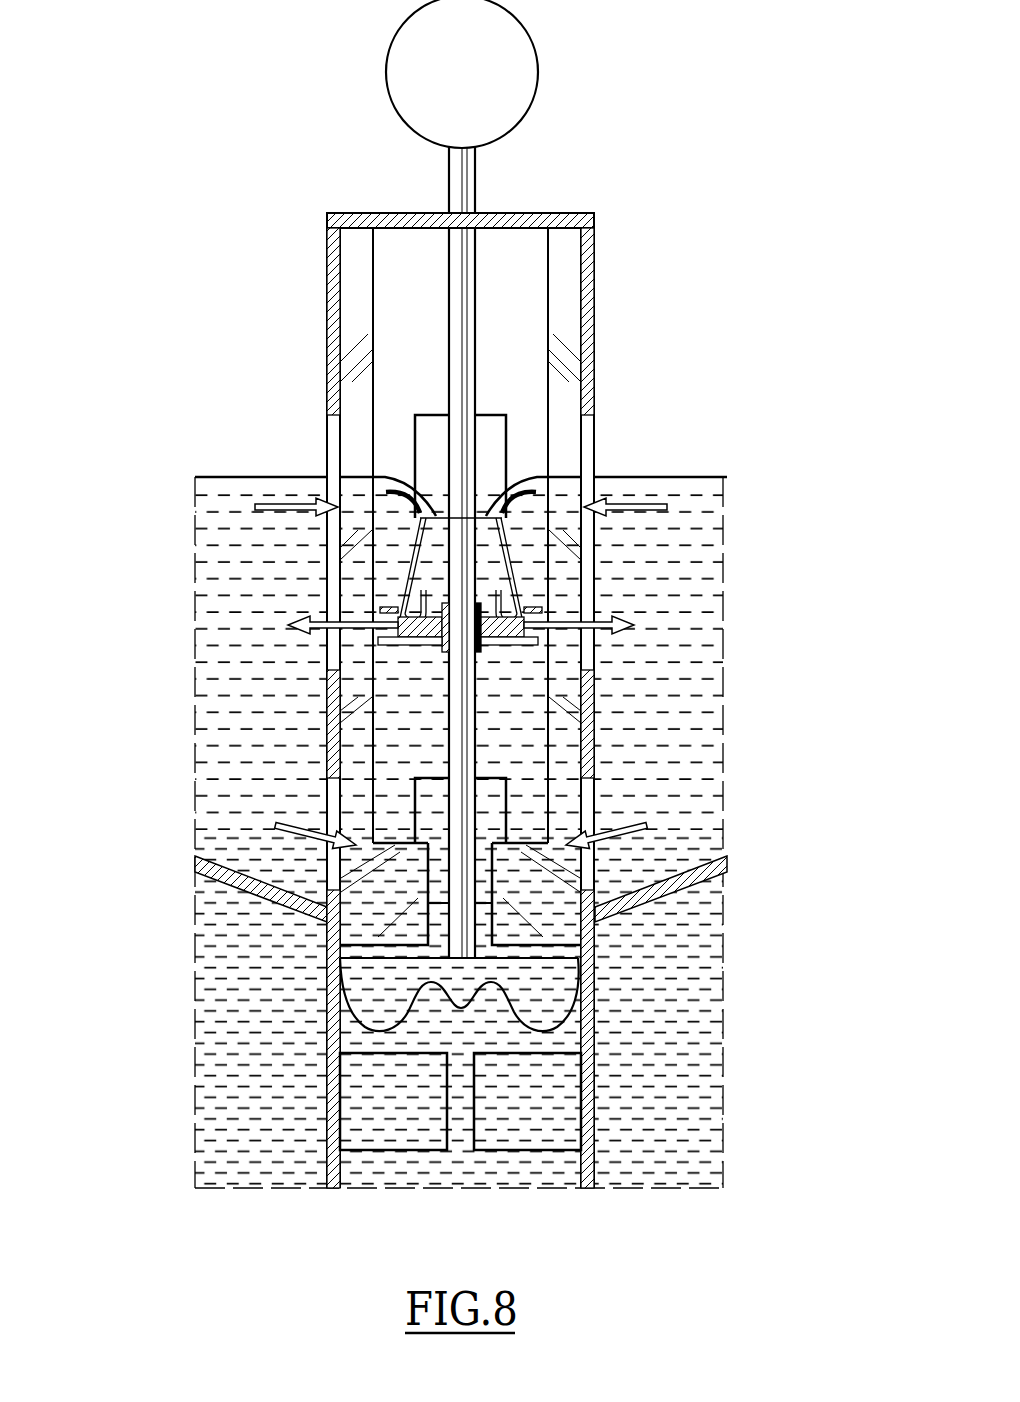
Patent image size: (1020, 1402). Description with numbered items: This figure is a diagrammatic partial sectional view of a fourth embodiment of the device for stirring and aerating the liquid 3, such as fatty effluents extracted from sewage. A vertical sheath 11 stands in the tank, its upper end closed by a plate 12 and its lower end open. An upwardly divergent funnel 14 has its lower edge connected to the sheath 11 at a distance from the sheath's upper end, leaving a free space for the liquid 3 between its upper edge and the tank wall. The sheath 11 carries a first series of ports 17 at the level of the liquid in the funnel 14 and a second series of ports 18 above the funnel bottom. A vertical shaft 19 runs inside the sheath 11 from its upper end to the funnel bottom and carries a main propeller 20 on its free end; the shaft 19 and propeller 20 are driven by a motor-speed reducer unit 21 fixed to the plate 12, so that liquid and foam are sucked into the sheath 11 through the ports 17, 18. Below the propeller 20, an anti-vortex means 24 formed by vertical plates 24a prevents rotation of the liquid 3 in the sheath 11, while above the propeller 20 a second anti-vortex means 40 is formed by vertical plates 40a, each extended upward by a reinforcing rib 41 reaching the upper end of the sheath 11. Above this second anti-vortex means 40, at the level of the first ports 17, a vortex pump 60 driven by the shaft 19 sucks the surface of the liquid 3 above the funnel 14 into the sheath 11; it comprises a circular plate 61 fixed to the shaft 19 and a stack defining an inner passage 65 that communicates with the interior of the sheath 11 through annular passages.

The motor-speed reducer unit 21 is at (533, 110).
The plate 12 is at (520, 212).
The vertical shaft 19 is at (465, 345).
The reinforcing rib 41 is at (363, 293).
The first series of ports 17 is at (334, 432).
The vortex pump 60 is at (527, 557).
The liquid 3 is at (675, 586).
The inner passage 65 is at (425, 588).
The circular plate 61 is at (503, 648).
The second series of ports 18 is at (593, 803).
The vertical plates 40a is at (322, 918).
The funnel 14 is at (713, 883).
The second anti-vortex means 40 is at (350, 946).
The main propeller 20 is at (550, 988).
The anti-vortex means 24 is at (335, 1117).
The vertical plates 24a is at (547, 1110).
The vertical sheath 11 is at (593, 1168).